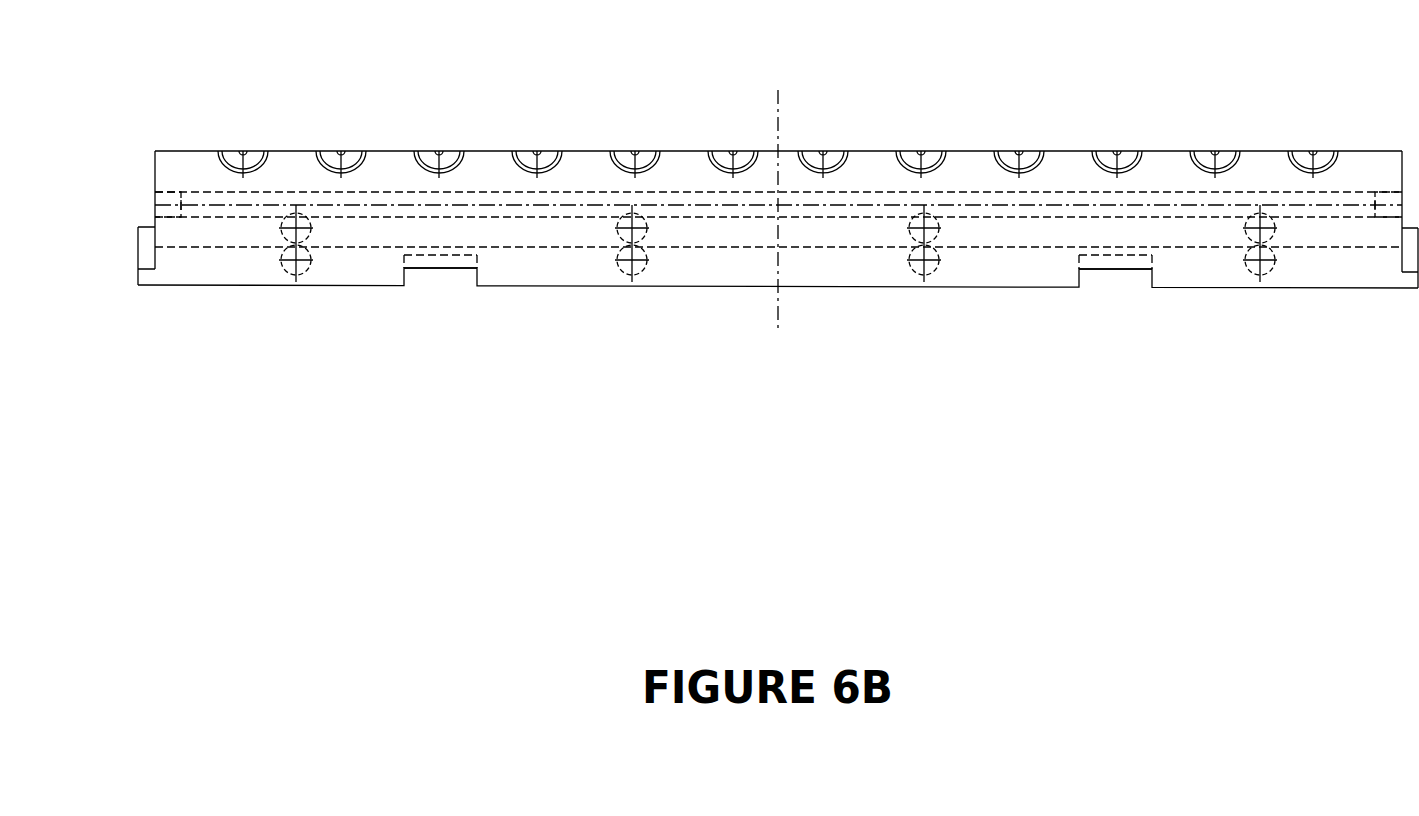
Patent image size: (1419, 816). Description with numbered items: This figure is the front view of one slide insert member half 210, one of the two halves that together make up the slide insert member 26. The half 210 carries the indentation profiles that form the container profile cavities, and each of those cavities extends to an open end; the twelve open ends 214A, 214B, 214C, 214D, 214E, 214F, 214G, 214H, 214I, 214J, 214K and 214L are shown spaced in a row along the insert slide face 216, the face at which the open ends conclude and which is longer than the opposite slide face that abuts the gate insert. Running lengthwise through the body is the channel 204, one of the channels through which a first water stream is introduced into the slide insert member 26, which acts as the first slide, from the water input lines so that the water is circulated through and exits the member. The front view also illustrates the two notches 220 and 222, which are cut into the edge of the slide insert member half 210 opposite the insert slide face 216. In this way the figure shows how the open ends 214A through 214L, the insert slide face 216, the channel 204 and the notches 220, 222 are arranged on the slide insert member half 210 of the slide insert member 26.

The slide insert member 26 is at (187, 151).
The channel 204 is at (201, 192).
The slide insert member half 210 is at (206, 343).
The open end 214A is at (219, 151).
The open end 214B is at (318, 151).
The open end 214C is at (416, 151).
The open end 214D is at (514, 151).
The open end 214E is at (612, 151).
The open end 214F is at (711, 151).
The open end 214G is at (846, 151).
The open end 214H is at (944, 151).
The open end 214I is at (1042, 151).
The open end 214J is at (1140, 151).
The open end 214K is at (1238, 151).
The open end 214L is at (1334, 151).
The insert slide face 216 is at (233, 269).
The notch 220 is at (436, 269).
The notch 222 is at (1113, 270).